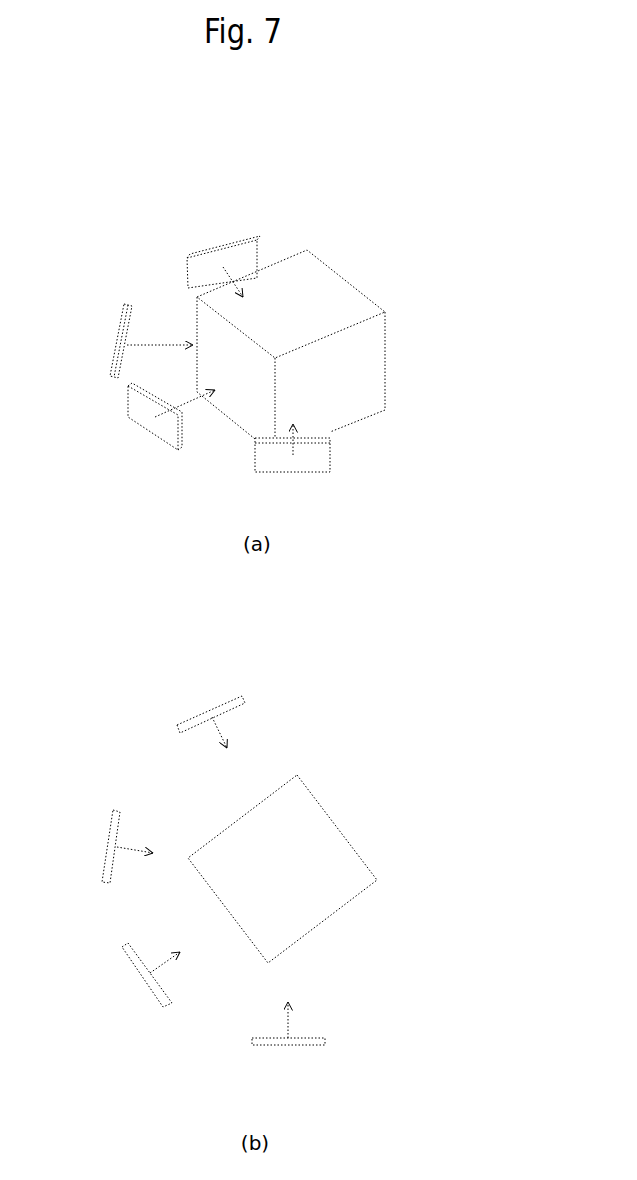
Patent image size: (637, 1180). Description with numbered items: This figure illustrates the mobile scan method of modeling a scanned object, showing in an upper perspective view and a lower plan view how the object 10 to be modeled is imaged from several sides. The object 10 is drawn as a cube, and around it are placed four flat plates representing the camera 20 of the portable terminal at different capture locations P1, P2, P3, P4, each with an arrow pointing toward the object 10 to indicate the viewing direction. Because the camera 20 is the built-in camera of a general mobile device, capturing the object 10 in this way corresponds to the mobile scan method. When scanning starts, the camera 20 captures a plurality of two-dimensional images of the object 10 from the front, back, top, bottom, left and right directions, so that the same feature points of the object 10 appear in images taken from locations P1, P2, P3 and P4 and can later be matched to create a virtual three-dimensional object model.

The object 10 is at (327, 292).
The camera 20 is at (203, 622).
The camera location P1 is at (218, 490).
The camera location P2 is at (134, 593).
The camera location P3 is at (166, 695).
The fourth pressing plate P4 is at (291, 751).